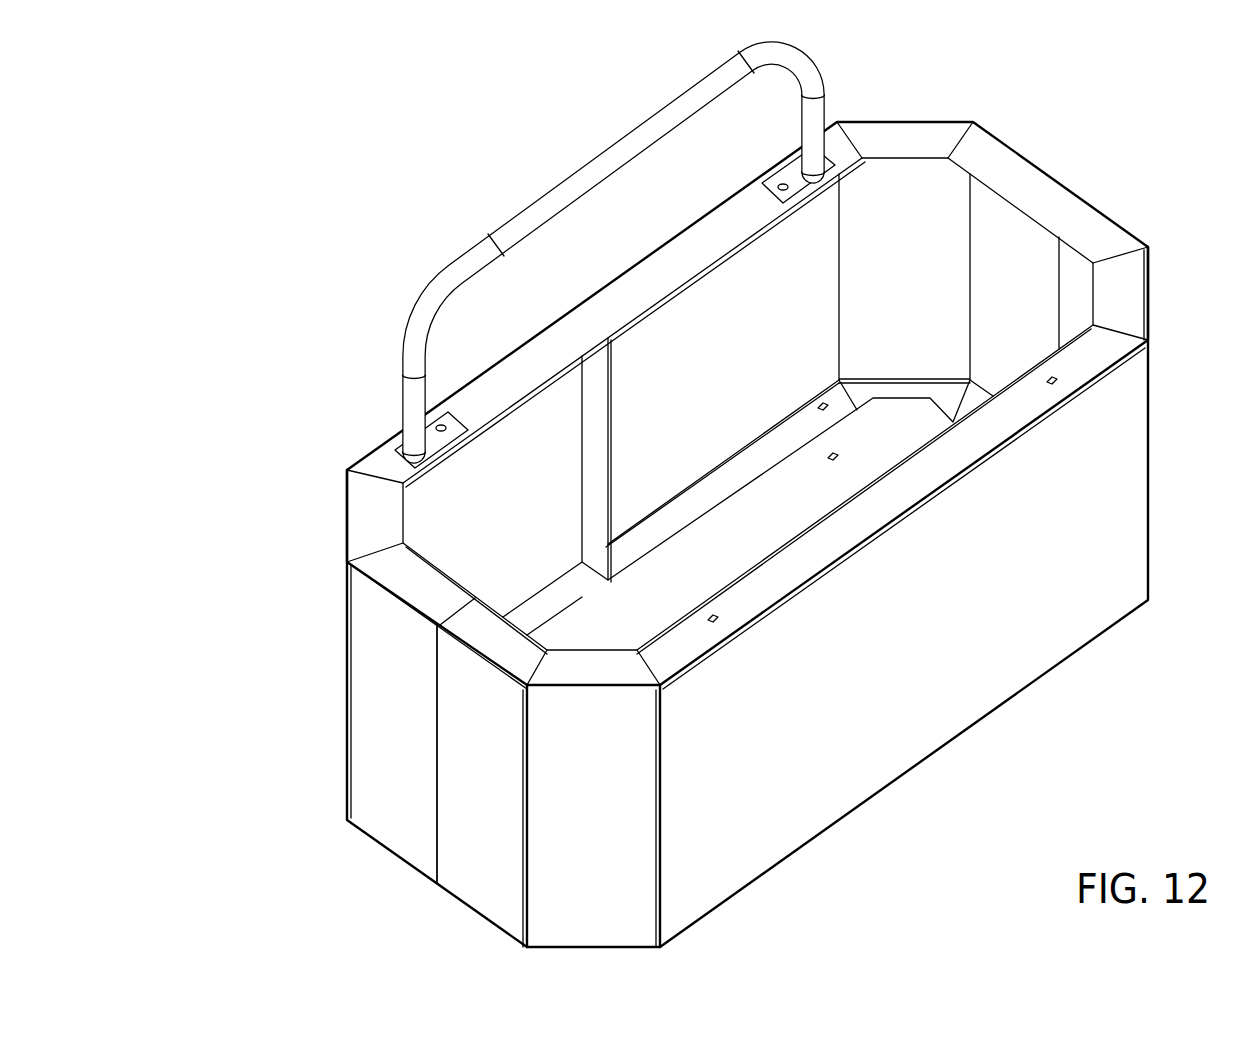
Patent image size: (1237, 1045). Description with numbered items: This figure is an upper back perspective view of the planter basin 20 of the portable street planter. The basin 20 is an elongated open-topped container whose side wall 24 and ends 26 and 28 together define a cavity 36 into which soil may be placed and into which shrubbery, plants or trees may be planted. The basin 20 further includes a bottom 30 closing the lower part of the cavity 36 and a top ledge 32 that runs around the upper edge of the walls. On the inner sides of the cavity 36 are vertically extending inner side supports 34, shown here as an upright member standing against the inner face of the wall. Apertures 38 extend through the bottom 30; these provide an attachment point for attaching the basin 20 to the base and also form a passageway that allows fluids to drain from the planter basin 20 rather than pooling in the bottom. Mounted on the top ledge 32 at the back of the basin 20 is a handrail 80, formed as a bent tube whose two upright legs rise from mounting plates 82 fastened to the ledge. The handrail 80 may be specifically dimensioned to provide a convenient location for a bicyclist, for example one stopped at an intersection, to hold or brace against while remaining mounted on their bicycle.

The planter basin 20 is at (279, 216).
The side wall 24 is at (1000, 605).
The end 26 is at (373, 707).
The end 28 is at (1037, 255).
The bottom 30 is at (681, 577).
The top ledge 32 is at (378, 460).
The inner side support 34 is at (597, 442).
The cavity 36 is at (933, 220).
The aperture 38 is at (833, 457).
The handrail 80 is at (598, 155).
The handle mounting plate 82 is at (443, 428).